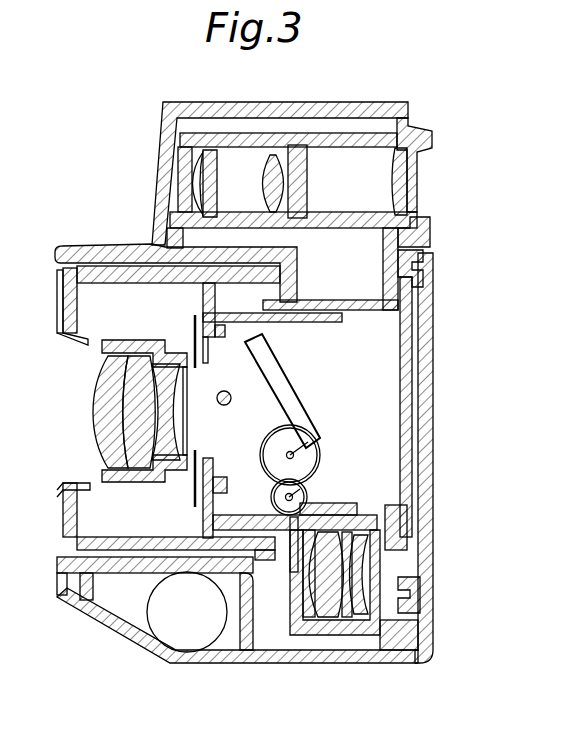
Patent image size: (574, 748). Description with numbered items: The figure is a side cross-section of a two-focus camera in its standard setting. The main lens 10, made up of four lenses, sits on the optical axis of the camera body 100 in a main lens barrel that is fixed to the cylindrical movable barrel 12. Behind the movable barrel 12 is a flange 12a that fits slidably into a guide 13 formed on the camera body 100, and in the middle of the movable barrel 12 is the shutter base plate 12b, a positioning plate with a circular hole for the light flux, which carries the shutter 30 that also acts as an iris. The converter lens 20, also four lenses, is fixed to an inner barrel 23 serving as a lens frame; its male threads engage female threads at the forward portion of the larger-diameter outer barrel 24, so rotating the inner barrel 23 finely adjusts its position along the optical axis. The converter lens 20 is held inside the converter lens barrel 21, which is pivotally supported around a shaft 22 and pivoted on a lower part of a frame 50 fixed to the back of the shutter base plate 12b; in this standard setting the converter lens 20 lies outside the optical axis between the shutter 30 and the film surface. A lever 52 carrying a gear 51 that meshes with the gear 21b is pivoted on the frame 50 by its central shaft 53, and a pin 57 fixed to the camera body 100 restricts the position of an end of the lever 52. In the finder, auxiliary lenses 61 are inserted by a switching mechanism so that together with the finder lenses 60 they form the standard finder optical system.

The camera body 100 is at (436, 356).
The main lens 10 is at (160, 417).
The movable barrel 12 is at (117, 280).
The flange 12a is at (272, 562).
The shutter base plate 12b is at (203, 512).
The guide 13 is at (101, 262).
The converter lens 20 is at (368, 587).
The converter lens barrel 21 is at (345, 507).
The gear 21b is at (267, 496).
The shaft 22 is at (297, 494).
The inner barrel 23 is at (370, 637).
The outer barrel 24 is at (343, 633).
The shutter 30 is at (193, 485).
The frame 50 is at (305, 322).
The gear 51 is at (262, 445).
The lever 52 is at (287, 393).
The central shaft 53 is at (297, 450).
The pin 57 is at (227, 389).
The finder lenses 60 is at (302, 165).
The auxiliary lenses 61 is at (190, 168).